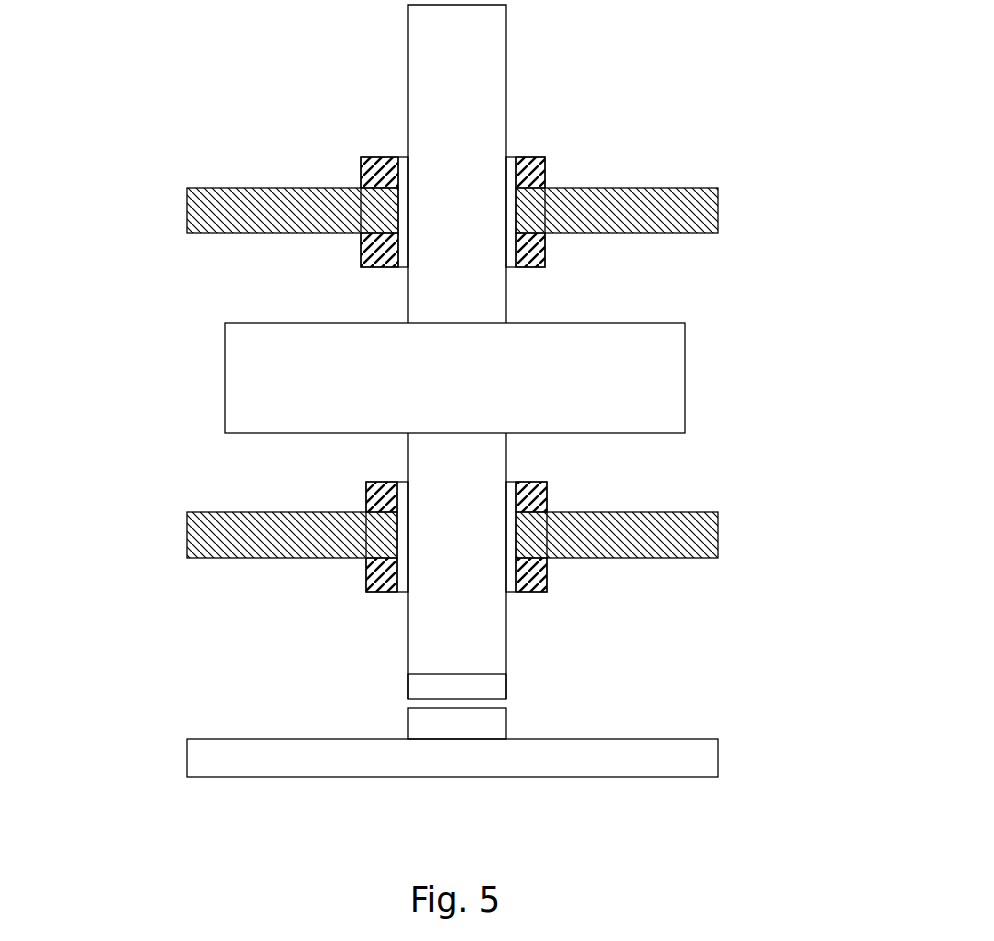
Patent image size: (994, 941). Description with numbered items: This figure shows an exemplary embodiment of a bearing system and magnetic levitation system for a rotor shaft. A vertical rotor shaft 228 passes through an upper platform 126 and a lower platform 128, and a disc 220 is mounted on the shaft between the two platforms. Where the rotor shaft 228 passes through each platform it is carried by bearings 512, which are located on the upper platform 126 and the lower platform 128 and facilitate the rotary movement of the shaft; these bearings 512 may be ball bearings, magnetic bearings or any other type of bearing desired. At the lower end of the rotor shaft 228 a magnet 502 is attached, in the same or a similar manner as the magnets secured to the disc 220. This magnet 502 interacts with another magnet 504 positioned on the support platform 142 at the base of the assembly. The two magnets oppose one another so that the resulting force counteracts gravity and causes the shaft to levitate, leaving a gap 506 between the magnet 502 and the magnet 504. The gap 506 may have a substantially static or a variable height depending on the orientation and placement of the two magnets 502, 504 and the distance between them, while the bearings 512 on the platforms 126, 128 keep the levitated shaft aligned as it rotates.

The rotor shaft 228 is at (484, 82).
The disc 220 is at (712, 381).
The upper platform 126 is at (187, 212).
The lower platform 128 is at (187, 534).
The bearings 512 is at (378, 160).
The magnet 502 is at (502, 685).
The magnet 504 is at (505, 723).
The gap 506 is at (403, 707).
The support platform 142 is at (202, 768).